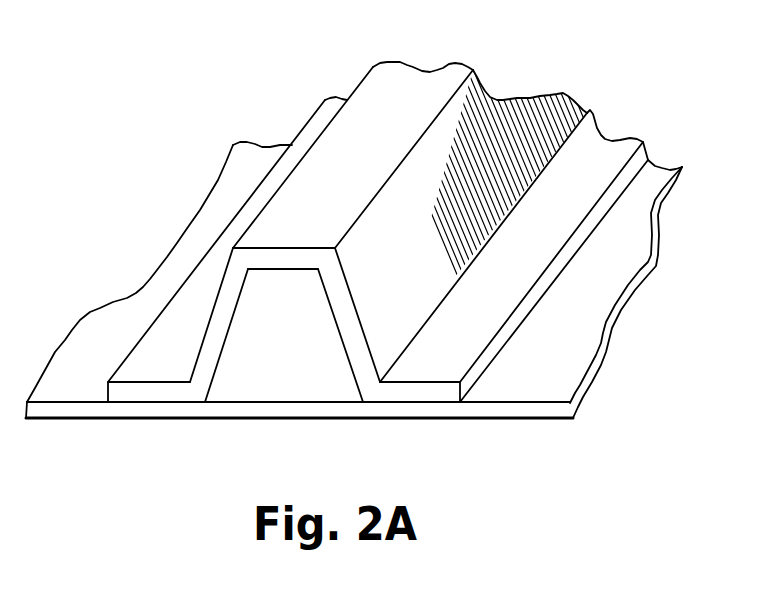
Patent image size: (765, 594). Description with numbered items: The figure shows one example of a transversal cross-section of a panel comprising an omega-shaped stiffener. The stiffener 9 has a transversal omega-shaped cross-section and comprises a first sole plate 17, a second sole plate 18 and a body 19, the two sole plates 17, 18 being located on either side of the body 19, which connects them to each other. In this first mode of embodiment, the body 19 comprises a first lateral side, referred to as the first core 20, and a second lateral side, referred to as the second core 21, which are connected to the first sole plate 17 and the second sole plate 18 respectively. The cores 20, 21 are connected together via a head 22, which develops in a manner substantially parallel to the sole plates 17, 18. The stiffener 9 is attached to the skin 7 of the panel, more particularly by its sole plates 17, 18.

The skin 7 is at (102, 408).
The stiffener 9 is at (395, 107).
The first sole plate 17 is at (182, 320).
The second sole plate 18 is at (440, 347).
The body 19 is at (516, 112).
The first core 20 is at (217, 343).
The second core 21 is at (353, 343).
The head 22 is at (287, 255).